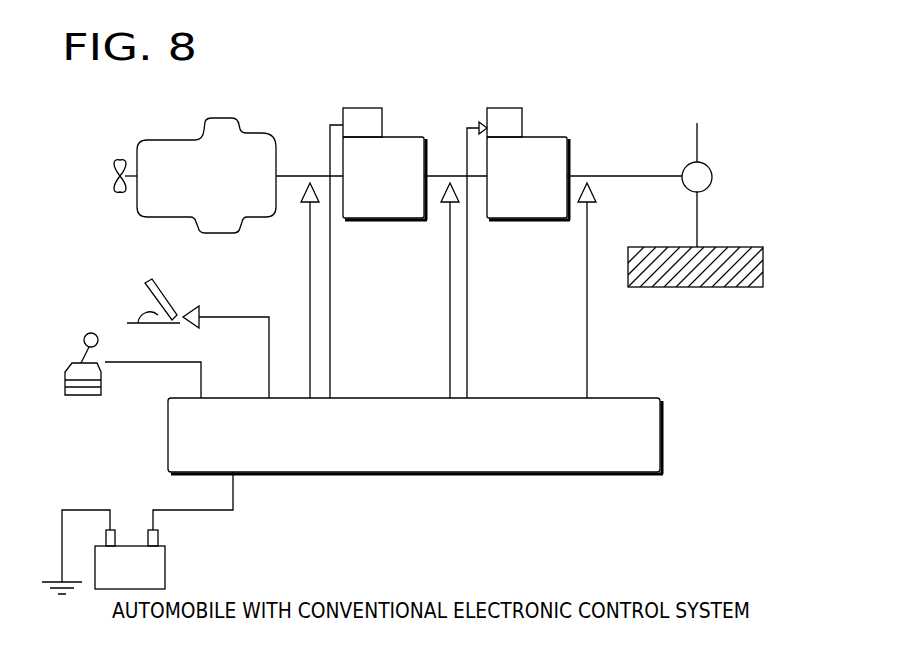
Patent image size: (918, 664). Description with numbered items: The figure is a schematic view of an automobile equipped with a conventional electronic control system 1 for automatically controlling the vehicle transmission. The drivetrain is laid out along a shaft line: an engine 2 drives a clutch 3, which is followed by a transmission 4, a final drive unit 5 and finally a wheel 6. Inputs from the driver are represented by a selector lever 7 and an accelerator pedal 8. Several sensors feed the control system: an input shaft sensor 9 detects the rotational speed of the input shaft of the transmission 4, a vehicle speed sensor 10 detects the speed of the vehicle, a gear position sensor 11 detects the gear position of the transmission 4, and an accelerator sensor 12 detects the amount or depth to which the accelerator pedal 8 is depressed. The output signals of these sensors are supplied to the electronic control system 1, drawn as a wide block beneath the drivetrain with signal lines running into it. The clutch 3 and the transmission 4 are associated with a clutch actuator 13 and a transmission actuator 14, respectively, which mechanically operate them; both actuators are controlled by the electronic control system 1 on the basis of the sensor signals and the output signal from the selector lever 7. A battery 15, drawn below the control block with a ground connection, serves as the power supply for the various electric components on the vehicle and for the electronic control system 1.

The electronic control system 1 is at (660, 423).
The engine 2 is at (172, 140).
The clutch 3 is at (412, 137).
The transmission 4 is at (554, 137).
The final drive unit 5 is at (708, 166).
The wheel 6 is at (703, 287).
The selector lever 7 is at (72, 361).
The accelerator pedal 8 is at (145, 308).
The input shaft sensor 9 is at (442, 208).
The vehicle speed sensor 10 is at (580, 207).
The gear position sensor 11 is at (478, 125).
The accelerator sensor 12 is at (187, 303).
The clutch actuator 13 is at (342, 108).
The transmission actuator 14 is at (515, 108).
The battery 15 is at (165, 552).